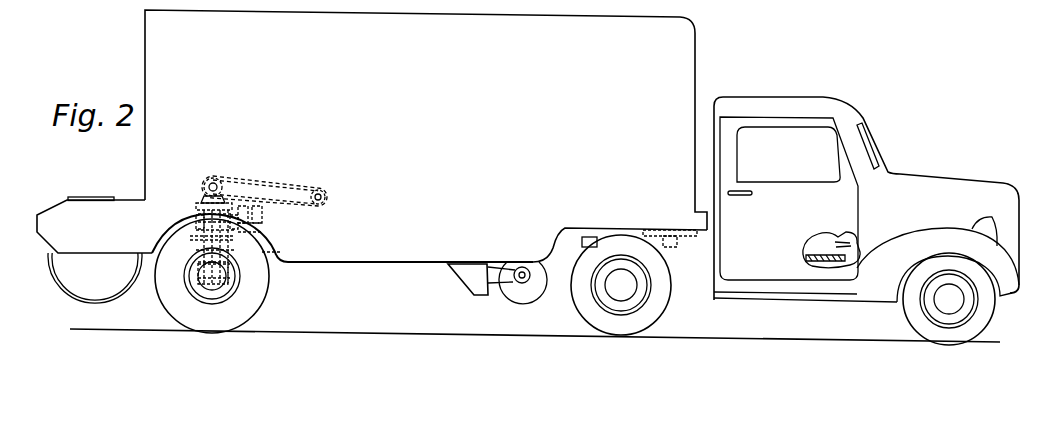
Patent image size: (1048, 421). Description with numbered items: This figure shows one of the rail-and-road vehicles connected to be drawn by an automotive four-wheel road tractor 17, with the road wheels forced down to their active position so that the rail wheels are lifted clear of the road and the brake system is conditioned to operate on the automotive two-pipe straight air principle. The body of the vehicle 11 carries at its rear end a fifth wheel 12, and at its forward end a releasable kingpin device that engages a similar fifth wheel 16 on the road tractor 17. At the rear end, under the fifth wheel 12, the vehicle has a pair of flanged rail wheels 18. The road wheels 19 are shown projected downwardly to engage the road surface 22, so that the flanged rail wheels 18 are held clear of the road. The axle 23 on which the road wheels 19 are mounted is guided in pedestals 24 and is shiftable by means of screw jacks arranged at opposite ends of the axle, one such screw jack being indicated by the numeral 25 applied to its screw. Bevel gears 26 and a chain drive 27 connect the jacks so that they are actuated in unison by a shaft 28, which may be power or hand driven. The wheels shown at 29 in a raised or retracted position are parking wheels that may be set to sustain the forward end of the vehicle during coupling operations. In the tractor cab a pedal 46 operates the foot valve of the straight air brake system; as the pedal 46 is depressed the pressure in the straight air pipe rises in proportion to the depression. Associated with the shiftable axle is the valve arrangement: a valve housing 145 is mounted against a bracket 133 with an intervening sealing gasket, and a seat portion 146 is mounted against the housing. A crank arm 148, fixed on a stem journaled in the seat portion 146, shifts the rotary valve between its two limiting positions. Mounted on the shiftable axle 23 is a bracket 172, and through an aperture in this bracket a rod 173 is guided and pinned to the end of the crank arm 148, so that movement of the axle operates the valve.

The body of the vehicle 11 is at (426, 120).
The fifth wheel 12 is at (99, 199).
The fifth wheel of the road tractor 16 is at (666, 227).
The automotive four-wheel road tractor 17 is at (880, 182).
The flanged rail wheels 18 is at (75, 273).
The road wheels 19 is at (253, 303).
The road surface 22 is at (334, 334).
The axle 23 is at (197, 283).
The pedestals 24 is at (188, 240).
The screw jack 25 is at (196, 207).
The bevel gears 26 is at (202, 183).
The chain drive 27 is at (285, 178).
The shaft 28 is at (326, 197).
The parking wheels 29 is at (518, 296).
The pedal 46 is at (843, 240).
The bracket 133 is at (264, 198).
The valve housing 145 is at (265, 191).
The seat portion 146 is at (262, 235).
The crank arm 148 is at (262, 221).
The bracket 172 is at (240, 271).
The rod 173 is at (280, 252).